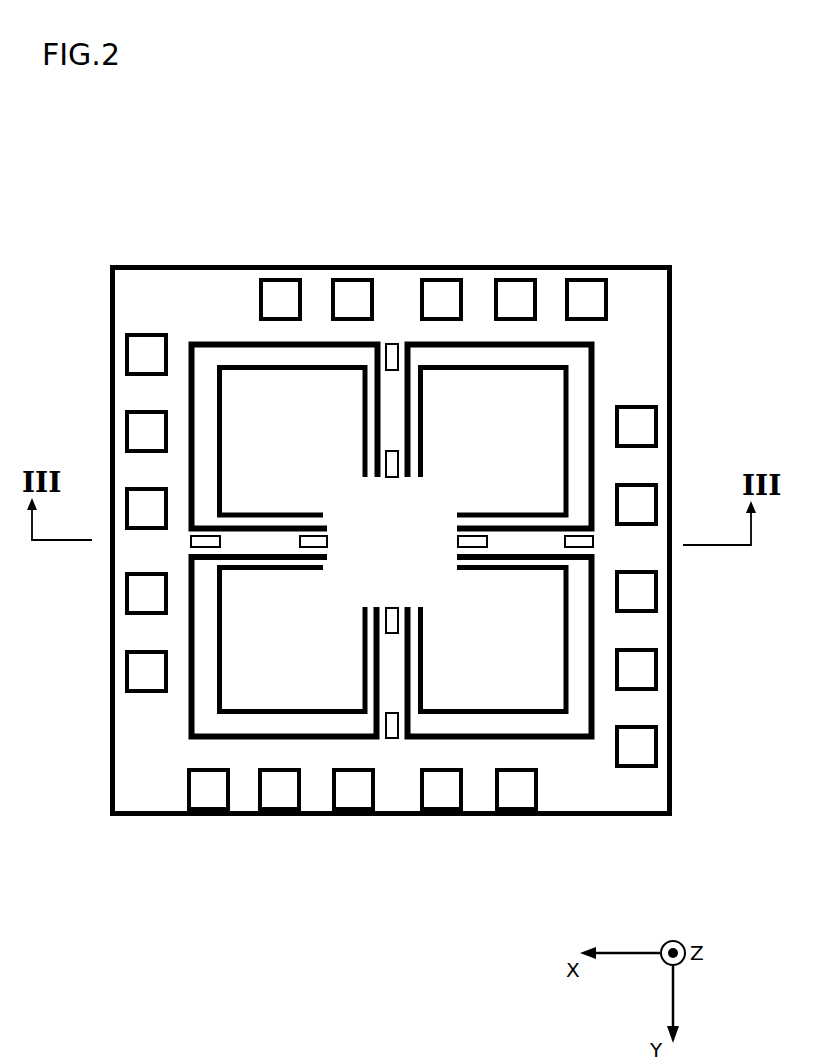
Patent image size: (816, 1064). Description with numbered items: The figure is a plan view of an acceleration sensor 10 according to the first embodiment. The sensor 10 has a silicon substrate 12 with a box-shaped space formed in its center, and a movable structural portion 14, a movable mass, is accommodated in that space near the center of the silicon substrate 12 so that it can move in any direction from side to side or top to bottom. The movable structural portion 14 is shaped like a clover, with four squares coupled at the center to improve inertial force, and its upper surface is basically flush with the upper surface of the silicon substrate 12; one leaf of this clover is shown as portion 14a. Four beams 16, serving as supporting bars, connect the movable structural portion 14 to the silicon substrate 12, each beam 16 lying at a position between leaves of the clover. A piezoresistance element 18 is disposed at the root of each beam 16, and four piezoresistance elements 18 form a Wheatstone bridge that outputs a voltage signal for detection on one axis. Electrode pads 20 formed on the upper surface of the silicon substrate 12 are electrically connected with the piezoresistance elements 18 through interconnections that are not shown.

The acceleration sensor 10 is at (494, 150).
The silicon substrate 12 is at (639, 265).
The movable structural portion 14 is at (457, 523).
The inner weight portion 14a is at (582, 640).
The beam 16 is at (331, 623).
The piezoresistance element 18 is at (395, 609).
The electrode pad 20 is at (276, 283).